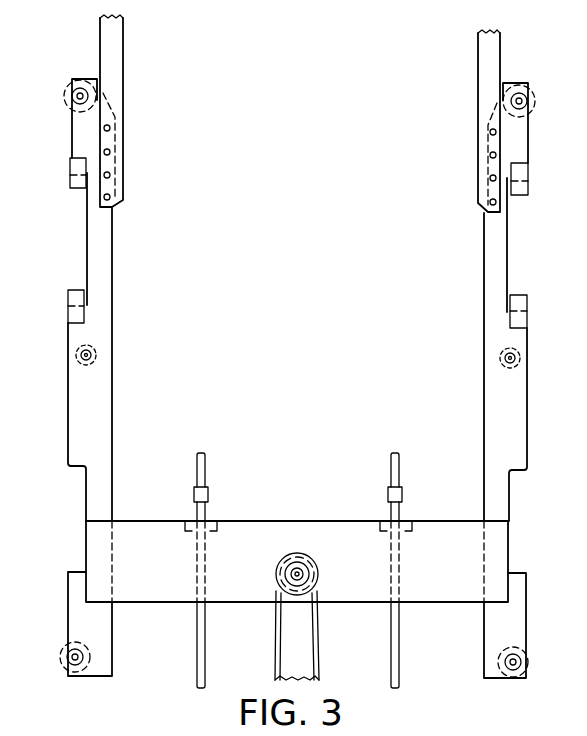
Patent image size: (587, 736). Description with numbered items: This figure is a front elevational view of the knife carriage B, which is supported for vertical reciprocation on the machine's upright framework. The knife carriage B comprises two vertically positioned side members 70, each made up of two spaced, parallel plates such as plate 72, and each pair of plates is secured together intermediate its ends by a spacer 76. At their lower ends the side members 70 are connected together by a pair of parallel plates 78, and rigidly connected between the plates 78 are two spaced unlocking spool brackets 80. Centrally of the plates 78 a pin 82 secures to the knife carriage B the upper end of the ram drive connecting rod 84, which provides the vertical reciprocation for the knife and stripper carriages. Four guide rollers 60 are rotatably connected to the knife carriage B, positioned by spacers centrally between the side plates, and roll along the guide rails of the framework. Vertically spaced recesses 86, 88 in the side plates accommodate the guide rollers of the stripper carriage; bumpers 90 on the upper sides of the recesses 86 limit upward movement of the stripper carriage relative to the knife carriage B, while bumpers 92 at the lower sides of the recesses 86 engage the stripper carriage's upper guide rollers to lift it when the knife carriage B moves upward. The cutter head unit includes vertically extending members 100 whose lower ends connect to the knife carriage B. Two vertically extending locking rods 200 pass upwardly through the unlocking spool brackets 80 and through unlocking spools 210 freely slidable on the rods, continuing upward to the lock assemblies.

The guide rollers 60 is at (65, 96).
The side members 70 is at (112, 358).
The plate 72 is at (518, 395).
The spacer 76 is at (78, 357).
The parallel plates 78 is at (323, 521).
The unlocking spool brackets 80 is at (187, 528).
The pin 82 is at (306, 577).
The ram drive connecting rod 84 is at (290, 650).
The recess 86 is at (86, 240).
The recess 88 is at (86, 530).
The bumpers 90 is at (70, 178).
The bumpers 92 is at (68, 298).
The vertically extending members 100 is at (115, 82).
The locking rods 200 is at (197, 652).
The unlocking spool 210 is at (208, 502).
The knife carriage B is at (127, 245).